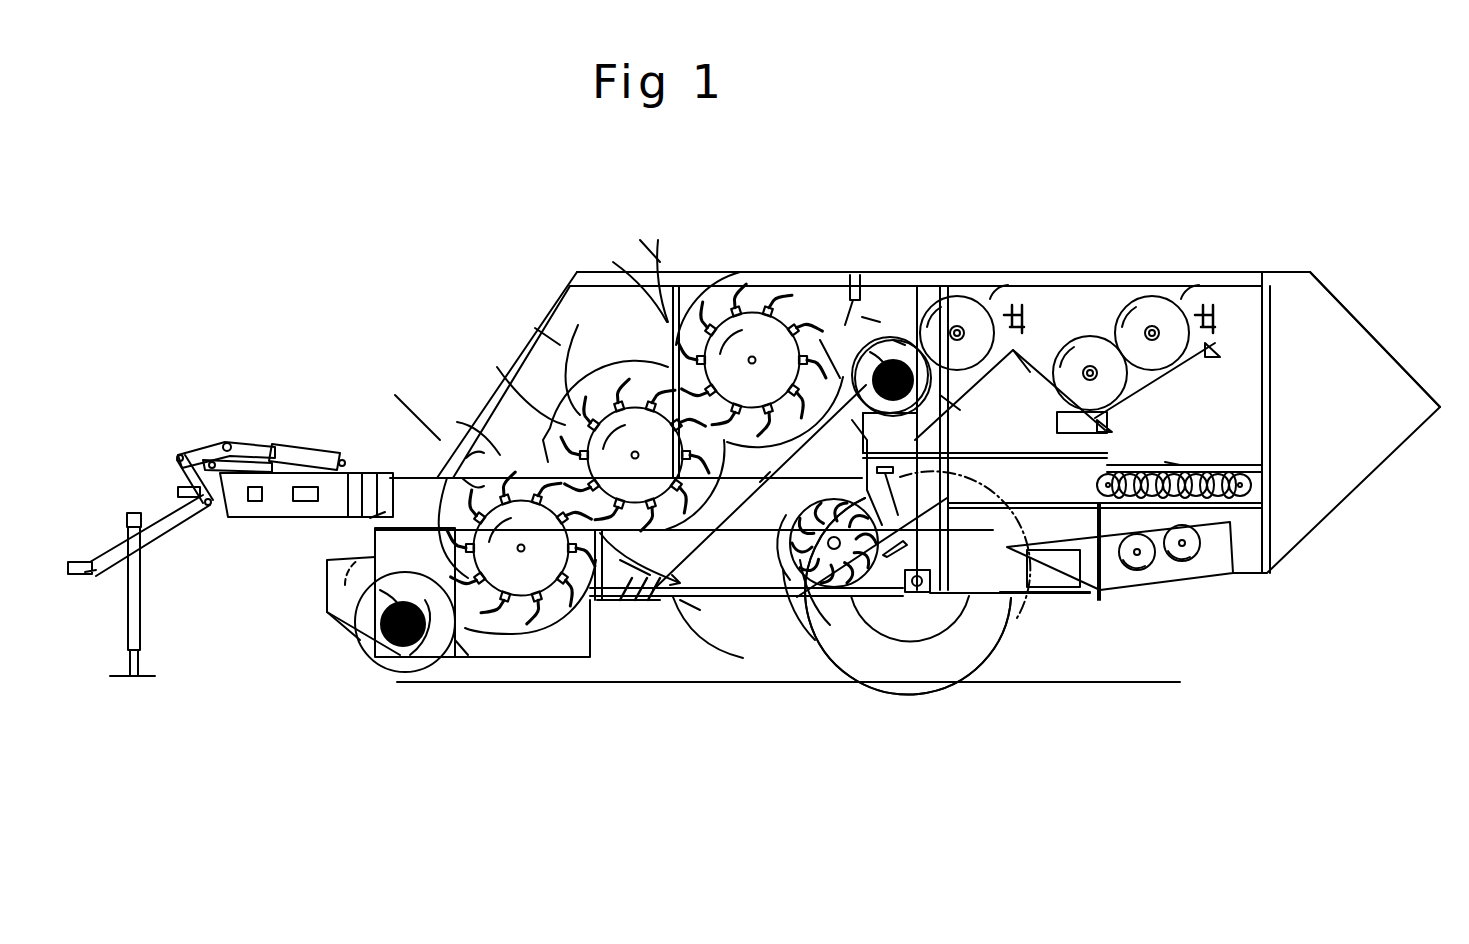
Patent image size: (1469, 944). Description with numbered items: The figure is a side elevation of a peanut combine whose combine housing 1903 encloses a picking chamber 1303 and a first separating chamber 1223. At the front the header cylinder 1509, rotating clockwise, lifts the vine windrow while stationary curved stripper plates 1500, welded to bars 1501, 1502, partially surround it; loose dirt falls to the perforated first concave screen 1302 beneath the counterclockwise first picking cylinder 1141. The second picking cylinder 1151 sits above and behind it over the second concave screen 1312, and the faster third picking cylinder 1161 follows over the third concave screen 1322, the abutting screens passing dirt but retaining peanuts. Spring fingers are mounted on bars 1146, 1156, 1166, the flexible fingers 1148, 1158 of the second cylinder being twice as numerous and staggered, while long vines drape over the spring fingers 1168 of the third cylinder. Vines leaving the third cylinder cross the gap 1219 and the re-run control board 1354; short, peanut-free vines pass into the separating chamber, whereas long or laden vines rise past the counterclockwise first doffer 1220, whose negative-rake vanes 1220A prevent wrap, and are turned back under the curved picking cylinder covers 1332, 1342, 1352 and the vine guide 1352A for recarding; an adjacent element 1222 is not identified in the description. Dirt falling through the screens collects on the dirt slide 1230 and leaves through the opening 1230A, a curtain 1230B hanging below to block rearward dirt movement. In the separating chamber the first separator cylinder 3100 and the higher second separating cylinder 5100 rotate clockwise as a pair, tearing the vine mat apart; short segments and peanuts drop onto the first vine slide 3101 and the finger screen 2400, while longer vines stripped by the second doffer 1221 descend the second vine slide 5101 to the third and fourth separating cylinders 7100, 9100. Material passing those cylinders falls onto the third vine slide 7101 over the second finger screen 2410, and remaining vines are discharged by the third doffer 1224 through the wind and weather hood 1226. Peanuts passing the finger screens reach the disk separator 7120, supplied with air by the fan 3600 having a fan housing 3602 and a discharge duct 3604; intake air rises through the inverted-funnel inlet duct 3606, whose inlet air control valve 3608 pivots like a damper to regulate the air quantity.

The first picking cylinder 1141 is at (521, 548).
The second picking cylinder 1151 is at (635, 459).
The third picking cylinder 1161 is at (752, 360).
The bars 1146 is at (462, 478).
The flexible fingers 1148 is at (466, 458).
The bars 1156 is at (500, 383).
The flexible fingers 1158 is at (517, 324).
The bars 1166 is at (613, 270).
The spring fingers 1168 is at (619, 239).
The gap 1219 is at (840, 350).
The first doffer 1220 is at (872, 312).
The vanes 1220A is at (903, 332).
The second doffer 1221 is at (1027, 296).
The fan inlet 1222 is at (863, 317).
The first separating chamber 1223 is at (893, 340).
The third doffer 1224 is at (1216, 304).
The wind and weather hood 1226 is at (1320, 314).
The dirt slide 1230 is at (735, 652).
The opening 1230A is at (640, 602).
The curtain 1230B is at (665, 640).
The first concave screen 1302 is at (560, 652).
The picking chamber 1303 is at (384, 407).
The second concave screen 1312 is at (670, 560).
The third concave screen 1322 is at (775, 450).
The curved picking cylinder cover 1332 is at (678, 269).
The curved picking cylinder cover 1342 is at (601, 362).
The curved picking cylinder cover 1352 is at (447, 427).
The vine guide 1352A is at (370, 518).
The re-run control board 1354 is at (820, 340).
The stripper plates 1500 is at (352, 610).
The bar 1501 is at (452, 630).
The bar 1502 is at (455, 640).
The header cylinder 1509 is at (358, 660).
The combine housing 1903 is at (322, 556).
The finger screen 2400 is at (935, 442).
The second finger screen 2410 is at (1110, 428).
The first separator cylinder 3100 is at (890, 327).
The first vine slide 3101 is at (955, 397).
The fan 3600 is at (840, 592).
The fan housing 3602 is at (795, 585).
The discharge duct 3604 is at (930, 614).
The inlet duct 3606 is at (665, 590).
The inlet air control valve 3608 is at (775, 538).
The second separating cylinder 5100 is at (957, 333).
The second vine slide 5101 is at (1036, 356).
The third separating cylinder 7100 is at (1090, 373).
The third vine slide 7101 is at (1168, 386).
The disk separator 7120 is at (1180, 460).
The fourth separating cylinder 9100 is at (1152, 333).